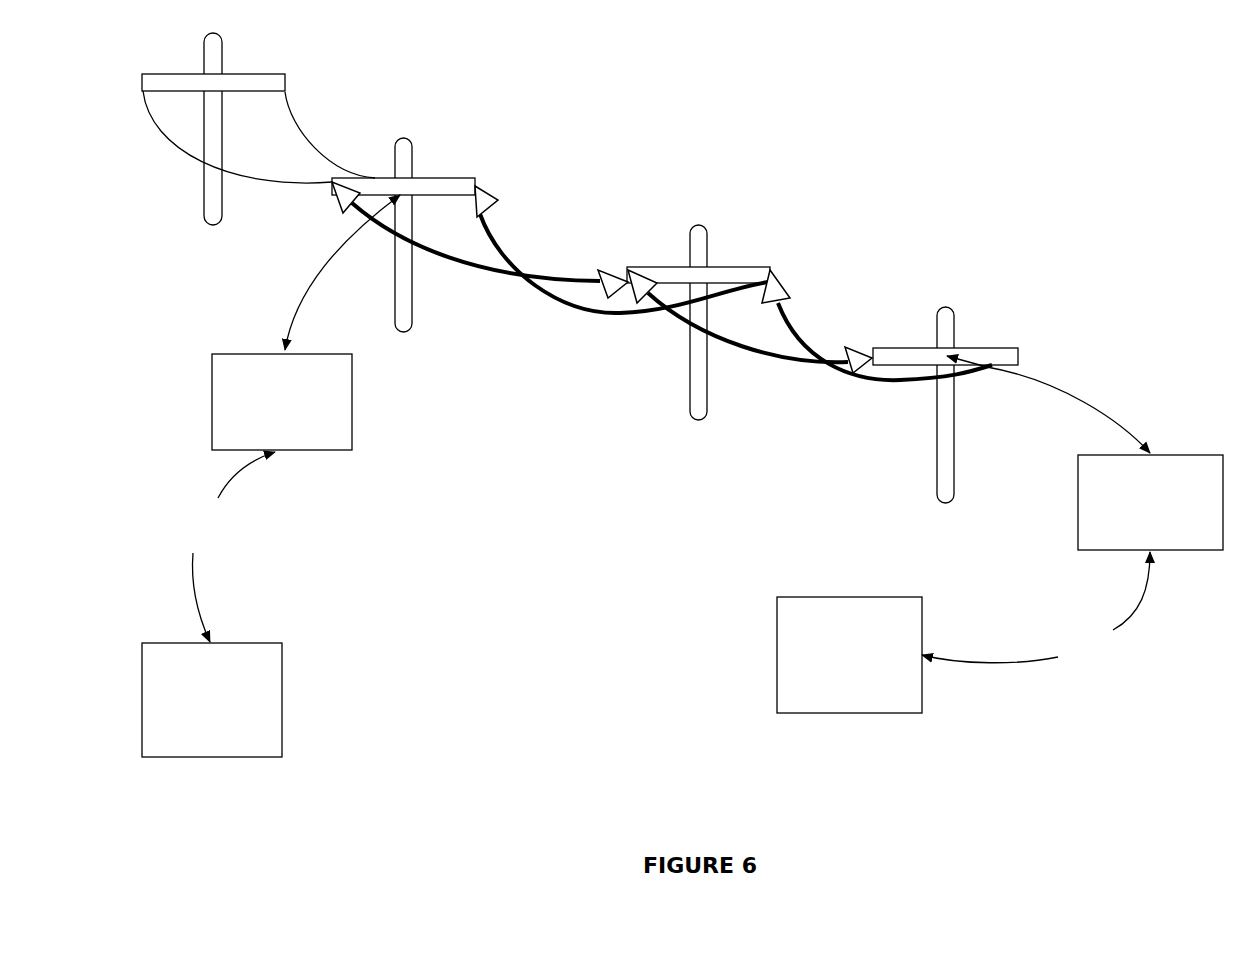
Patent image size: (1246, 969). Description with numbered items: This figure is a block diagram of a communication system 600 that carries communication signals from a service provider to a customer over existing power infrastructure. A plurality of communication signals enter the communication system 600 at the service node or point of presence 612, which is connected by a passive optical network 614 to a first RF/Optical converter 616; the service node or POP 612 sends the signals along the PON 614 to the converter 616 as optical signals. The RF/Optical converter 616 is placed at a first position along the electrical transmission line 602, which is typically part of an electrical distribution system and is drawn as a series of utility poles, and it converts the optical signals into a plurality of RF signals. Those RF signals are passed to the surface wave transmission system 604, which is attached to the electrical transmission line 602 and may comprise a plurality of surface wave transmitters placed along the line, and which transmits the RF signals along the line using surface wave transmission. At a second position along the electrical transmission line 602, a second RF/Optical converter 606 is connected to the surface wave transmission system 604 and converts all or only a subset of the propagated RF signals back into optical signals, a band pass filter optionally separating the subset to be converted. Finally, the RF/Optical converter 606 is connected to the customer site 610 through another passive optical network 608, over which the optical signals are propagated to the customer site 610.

The communication system 600 is at (600, 440).
The electrical transmission line 602 is at (310, 143).
The surface wave transmission system 604 is at (497, 237).
The RF/Optical converter 606 is at (1085, 453).
The passive optical network 608 is at (1036, 612).
The customer site 610 is at (849, 655).
The service node or point of presence (POP) 612 is at (212, 700).
The passive optical network 614 is at (229, 547).
The RF/Optical converter 616 is at (306, 322).